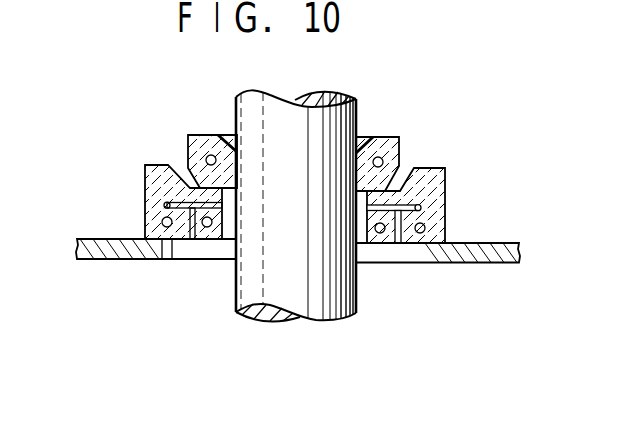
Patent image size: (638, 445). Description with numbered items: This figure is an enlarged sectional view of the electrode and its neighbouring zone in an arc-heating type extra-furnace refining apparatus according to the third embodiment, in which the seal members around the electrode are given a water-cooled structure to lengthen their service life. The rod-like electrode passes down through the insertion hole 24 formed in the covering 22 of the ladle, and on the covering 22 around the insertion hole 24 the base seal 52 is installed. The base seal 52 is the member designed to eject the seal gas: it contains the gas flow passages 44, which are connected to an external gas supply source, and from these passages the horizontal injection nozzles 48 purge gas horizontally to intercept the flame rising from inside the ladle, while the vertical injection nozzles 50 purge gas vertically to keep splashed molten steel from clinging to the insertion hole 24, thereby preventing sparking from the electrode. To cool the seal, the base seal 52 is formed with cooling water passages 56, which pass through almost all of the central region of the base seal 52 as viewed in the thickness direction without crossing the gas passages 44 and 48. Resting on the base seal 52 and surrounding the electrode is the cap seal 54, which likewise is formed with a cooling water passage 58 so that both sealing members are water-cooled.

The covering 22 is at (97, 248).
The insertion hole 24 is at (176, 246).
The gas flow passages 44 is at (421, 207).
The horizontal injection nozzles 48 is at (365, 207).
The vertical injection nozzles 50 is at (397, 246).
The base seal 52 is at (146, 180).
The cap seal 54 is at (207, 143).
The cooling water passages 56 is at (165, 230).
The cooling water passage 58 is at (380, 157).